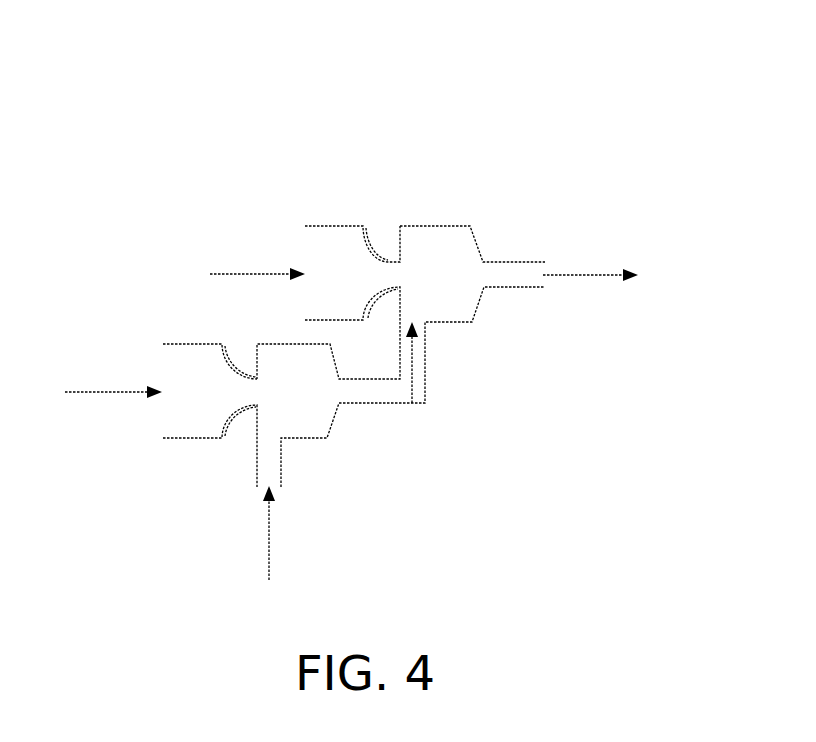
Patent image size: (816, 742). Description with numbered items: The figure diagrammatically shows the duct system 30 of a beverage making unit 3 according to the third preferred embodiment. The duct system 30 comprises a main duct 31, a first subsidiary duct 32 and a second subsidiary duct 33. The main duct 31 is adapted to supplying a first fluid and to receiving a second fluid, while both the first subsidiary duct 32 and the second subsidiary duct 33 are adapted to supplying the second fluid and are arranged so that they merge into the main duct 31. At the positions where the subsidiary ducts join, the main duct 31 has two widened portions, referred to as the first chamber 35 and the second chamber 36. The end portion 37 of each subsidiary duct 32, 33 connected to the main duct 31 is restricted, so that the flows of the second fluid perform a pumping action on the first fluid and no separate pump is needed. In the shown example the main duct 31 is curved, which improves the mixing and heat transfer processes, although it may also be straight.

The beverage making unit 3 is at (249, 170).
The duct system 30 is at (311, 158).
The main duct 31 is at (513, 273).
The first subsidiary duct 32 is at (177, 403).
The second subsidiary duct 33 is at (317, 247).
The first chamber 35 is at (307, 410).
The second chamber 36 is at (436, 257).
The end portion 37 is at (389, 270).